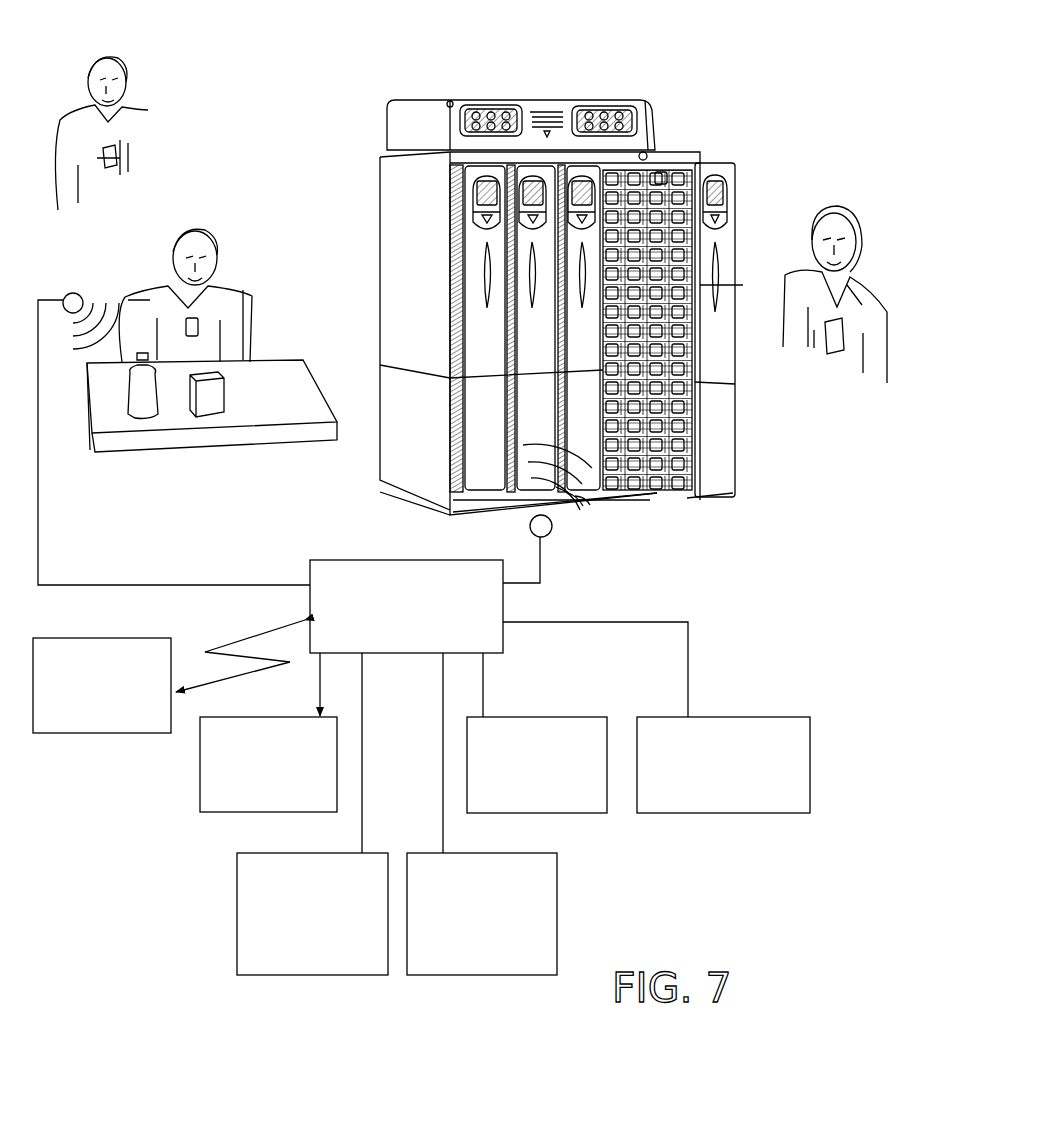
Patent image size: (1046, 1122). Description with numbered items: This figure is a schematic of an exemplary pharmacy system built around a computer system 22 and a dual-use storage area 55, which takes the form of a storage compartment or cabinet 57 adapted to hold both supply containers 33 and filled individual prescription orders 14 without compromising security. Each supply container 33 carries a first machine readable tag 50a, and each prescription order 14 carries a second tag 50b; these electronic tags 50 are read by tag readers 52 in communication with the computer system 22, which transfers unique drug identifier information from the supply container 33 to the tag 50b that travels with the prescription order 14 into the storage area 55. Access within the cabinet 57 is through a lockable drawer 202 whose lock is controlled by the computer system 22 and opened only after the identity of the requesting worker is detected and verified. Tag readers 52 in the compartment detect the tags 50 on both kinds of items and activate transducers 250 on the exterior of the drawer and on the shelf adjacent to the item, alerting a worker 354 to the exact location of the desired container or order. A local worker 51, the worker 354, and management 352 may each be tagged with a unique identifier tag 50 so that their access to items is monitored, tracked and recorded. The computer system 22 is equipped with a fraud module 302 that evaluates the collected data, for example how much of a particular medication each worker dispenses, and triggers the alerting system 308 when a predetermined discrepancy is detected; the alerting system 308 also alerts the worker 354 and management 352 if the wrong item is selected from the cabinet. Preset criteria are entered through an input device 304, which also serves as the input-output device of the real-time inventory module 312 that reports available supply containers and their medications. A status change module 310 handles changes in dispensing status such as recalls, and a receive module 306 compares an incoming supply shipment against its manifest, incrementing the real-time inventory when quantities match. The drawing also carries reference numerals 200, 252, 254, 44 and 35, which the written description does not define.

The dispensing machine 200 is at (362, 212).
The storage area 55 is at (388, 72).
The storage compartment or cabinet 57 is at (505, 78).
The computer system 22 is at (608, 100).
The individual prescription order 14 is at (645, 150).
The item storage array 252 is at (666, 168).
The supply container 33 is at (662, 170).
The lockable drawer 202 is at (718, 163).
The transducer 250 is at (697, 168).
The handle 254 is at (722, 257).
The cabinet 44 is at (735, 285).
The management 352 is at (148, 108).
The local worker 51 is at (240, 296).
The worker 354 is at (845, 215).
The electronic tag 50 is at (125, 158).
The tag reader 52 is at (74, 292).
The table 35 is at (112, 382).
The first machine readable tag 50a is at (148, 418).
The second machine readable tag 50b is at (212, 416).
The status change module 310 is at (78, 735).
The alerting system 308 is at (200, 762).
The fraud module 302 is at (567, 717).
The input device 304 is at (728, 717).
The real-time inventory module 312 is at (237, 917).
The receive module 306 is at (557, 898).